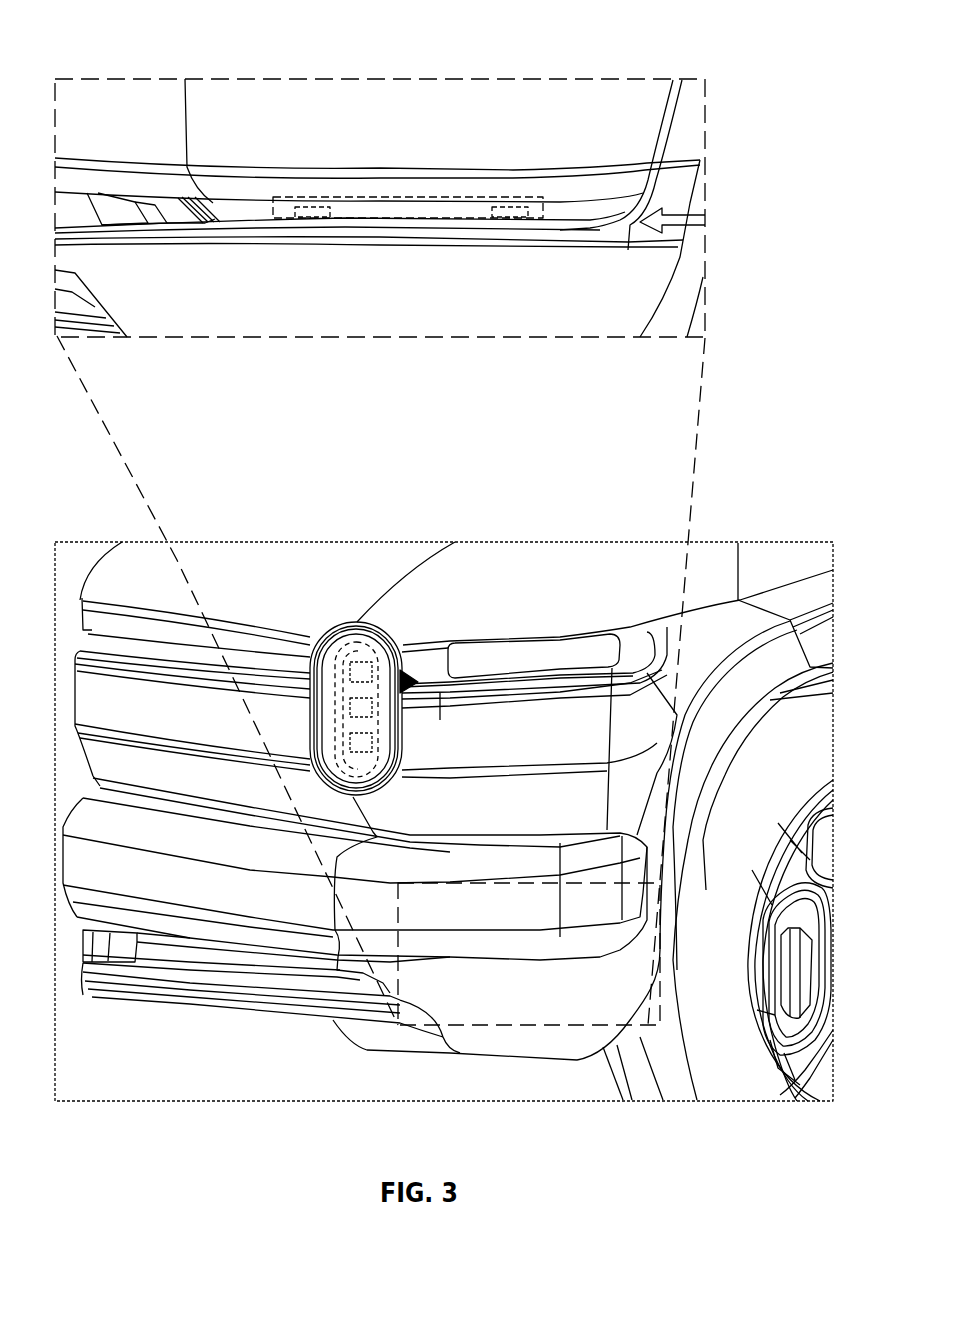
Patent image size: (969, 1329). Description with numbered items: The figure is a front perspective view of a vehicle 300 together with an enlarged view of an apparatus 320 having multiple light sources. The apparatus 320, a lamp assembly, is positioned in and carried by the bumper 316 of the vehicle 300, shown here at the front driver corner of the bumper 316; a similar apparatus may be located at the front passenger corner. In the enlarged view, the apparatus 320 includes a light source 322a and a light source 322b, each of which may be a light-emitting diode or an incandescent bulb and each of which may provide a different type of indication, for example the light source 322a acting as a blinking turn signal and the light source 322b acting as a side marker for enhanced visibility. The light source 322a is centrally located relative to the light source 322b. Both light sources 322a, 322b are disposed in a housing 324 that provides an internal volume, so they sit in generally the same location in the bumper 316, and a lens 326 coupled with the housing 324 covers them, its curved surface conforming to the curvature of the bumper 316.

The vehicle 300 is at (772, 496).
The bumper 316 is at (138, 127).
The apparatus 320 is at (543, 220).
The light source 322a is at (311, 206).
The light source 322b is at (509, 206).
The housing 324 is at (290, 198).
The lens 326 is at (250, 218).